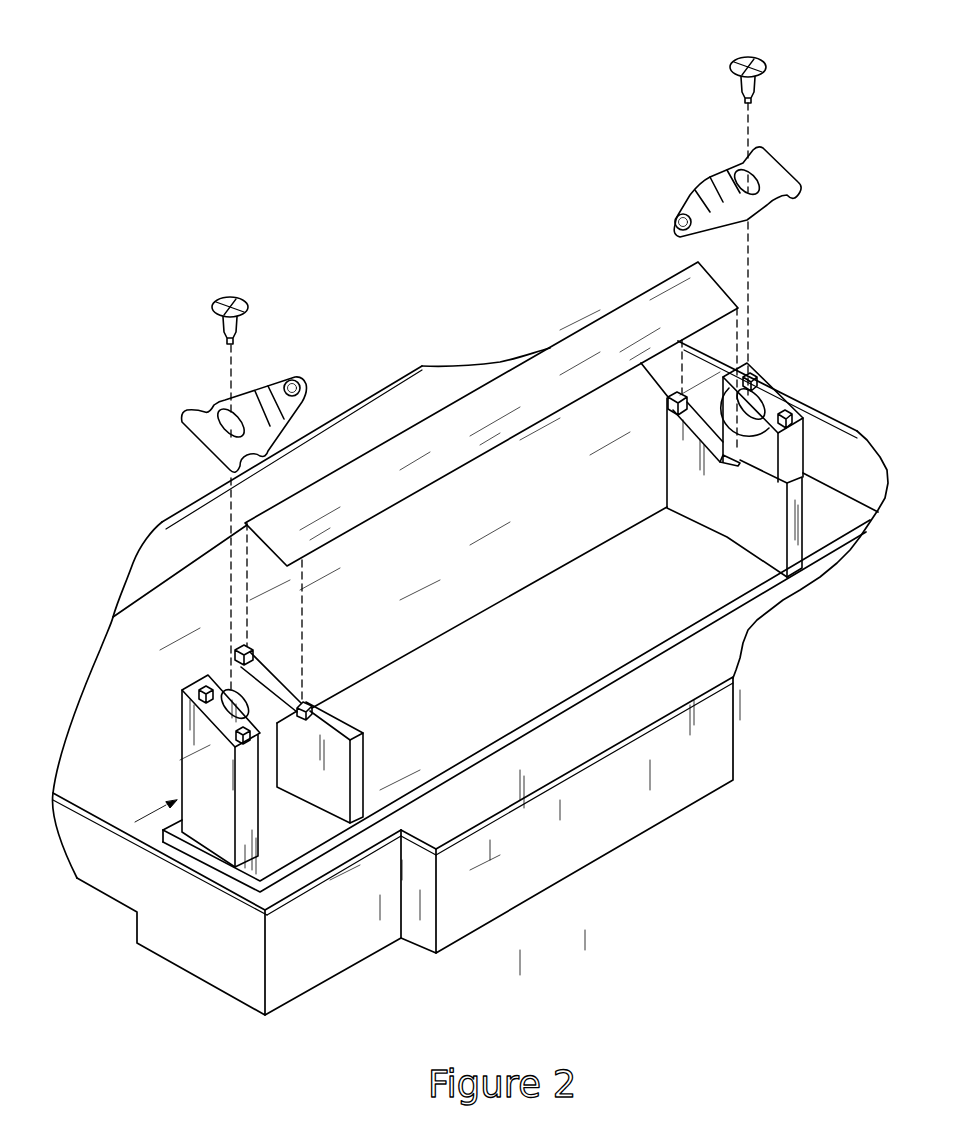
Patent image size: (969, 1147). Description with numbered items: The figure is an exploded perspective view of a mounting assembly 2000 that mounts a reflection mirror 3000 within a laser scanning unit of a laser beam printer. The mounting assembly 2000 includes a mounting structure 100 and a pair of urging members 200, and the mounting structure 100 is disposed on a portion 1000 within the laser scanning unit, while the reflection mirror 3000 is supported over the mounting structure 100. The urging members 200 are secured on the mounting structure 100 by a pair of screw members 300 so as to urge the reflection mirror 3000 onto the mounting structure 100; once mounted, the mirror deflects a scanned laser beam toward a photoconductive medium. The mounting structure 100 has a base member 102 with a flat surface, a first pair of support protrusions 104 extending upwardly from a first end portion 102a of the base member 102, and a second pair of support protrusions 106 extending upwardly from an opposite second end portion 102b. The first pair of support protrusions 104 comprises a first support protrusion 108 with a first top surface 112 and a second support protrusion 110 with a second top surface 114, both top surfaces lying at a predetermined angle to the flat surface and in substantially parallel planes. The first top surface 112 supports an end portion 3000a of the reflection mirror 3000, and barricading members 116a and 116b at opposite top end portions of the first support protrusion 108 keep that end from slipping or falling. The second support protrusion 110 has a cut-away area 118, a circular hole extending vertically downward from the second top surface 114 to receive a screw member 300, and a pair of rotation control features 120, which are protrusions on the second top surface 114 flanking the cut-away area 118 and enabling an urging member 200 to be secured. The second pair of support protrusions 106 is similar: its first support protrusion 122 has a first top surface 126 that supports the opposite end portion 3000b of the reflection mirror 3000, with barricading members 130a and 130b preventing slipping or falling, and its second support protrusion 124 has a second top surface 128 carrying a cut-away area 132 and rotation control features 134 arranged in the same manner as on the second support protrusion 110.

The mounting structure 100 is at (730, 640).
The base member 102 is at (523, 740).
The first end portion 102a is at (817, 570).
The second end portion 102b is at (287, 875).
The first pair of support protrusions 104 is at (810, 503).
The second pair of support protrusions 106 is at (110, 847).
The first support protrusion 108 is at (675, 472).
The second support protrusion 110 is at (793, 463).
The first top surface 112 is at (683, 420).
The second top surface 114 is at (767, 400).
The barricading member 116a is at (668, 398).
The barricading member 116b is at (757, 473).
The cut-away area 118 is at (727, 390).
The rotation control features 120 is at (751, 365).
The first support protrusion 122 is at (365, 765).
The second support protrusion 124 is at (185, 737).
The first top surface 126 is at (275, 677).
The second top surface 128 is at (197, 687).
The barricading member 130a is at (240, 650).
The barricading member 130b is at (325, 716).
The cut-away area 132 is at (233, 687).
The rotation control features 134 is at (203, 688).
The urging member 200 is at (187, 413).
The screw member 300 is at (227, 297).
The portion 1000 is at (487, 358).
The mounting assembly 2000 is at (170, 625).
The reflection mirror 3000 is at (633, 310).
The end portion 3000a is at (710, 290).
The end portion 3000b is at (273, 541).